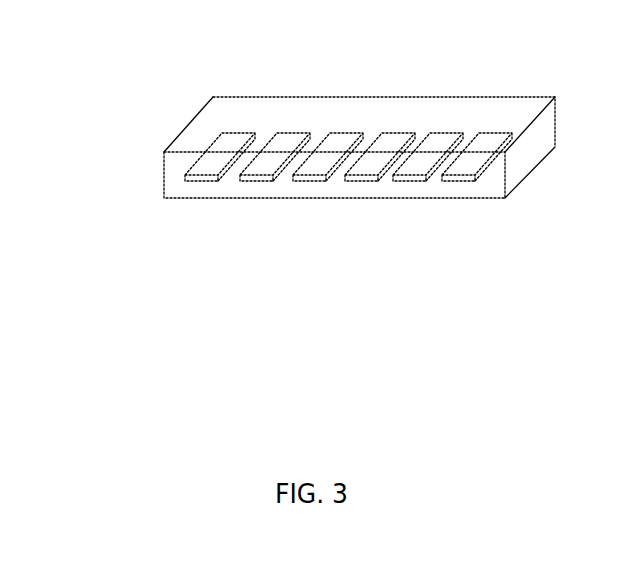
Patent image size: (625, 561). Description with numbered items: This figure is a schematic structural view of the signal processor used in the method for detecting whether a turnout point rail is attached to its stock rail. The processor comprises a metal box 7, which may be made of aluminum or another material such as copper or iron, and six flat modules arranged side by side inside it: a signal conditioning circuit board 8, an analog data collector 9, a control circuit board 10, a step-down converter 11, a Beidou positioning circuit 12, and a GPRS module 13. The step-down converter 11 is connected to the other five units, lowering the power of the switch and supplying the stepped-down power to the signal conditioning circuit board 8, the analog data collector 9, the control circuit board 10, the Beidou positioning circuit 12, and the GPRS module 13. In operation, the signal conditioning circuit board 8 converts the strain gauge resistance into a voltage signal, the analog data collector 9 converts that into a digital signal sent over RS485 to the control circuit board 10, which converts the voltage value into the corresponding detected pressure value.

The metal box 7 is at (193, 119).
The signal conditioning circuit board 8 is at (200, 179).
The analog data collector 9 is at (255, 181).
The control circuit board 10 is at (311, 181).
The step-down converter 11 is at (362, 181).
The Beidou positioning circuit 12 is at (410, 181).
The GPRS module 13 is at (475, 181).